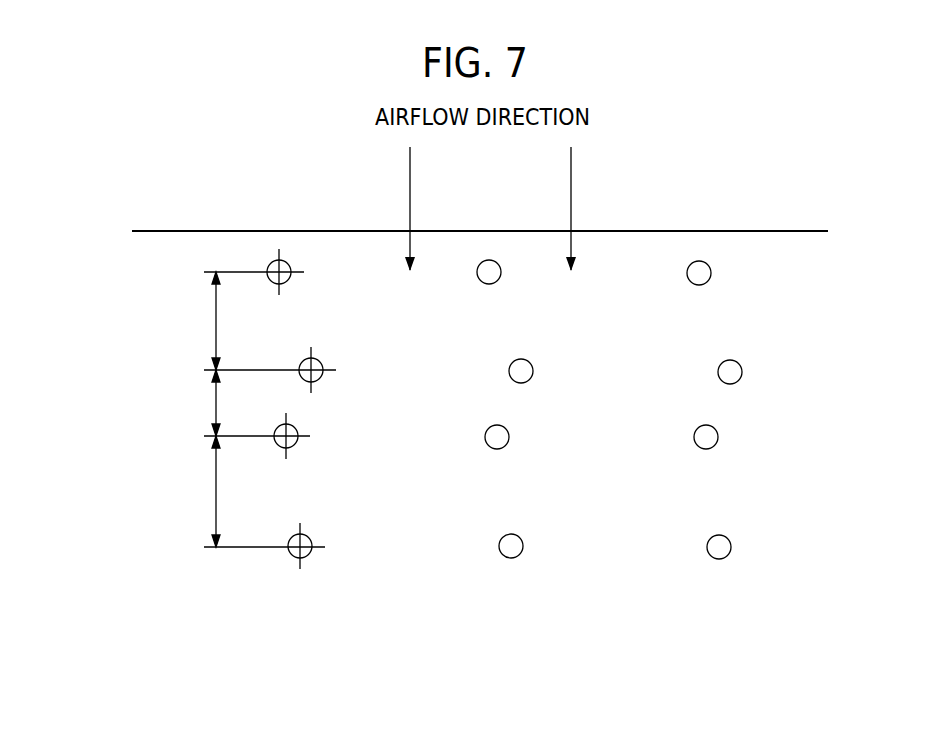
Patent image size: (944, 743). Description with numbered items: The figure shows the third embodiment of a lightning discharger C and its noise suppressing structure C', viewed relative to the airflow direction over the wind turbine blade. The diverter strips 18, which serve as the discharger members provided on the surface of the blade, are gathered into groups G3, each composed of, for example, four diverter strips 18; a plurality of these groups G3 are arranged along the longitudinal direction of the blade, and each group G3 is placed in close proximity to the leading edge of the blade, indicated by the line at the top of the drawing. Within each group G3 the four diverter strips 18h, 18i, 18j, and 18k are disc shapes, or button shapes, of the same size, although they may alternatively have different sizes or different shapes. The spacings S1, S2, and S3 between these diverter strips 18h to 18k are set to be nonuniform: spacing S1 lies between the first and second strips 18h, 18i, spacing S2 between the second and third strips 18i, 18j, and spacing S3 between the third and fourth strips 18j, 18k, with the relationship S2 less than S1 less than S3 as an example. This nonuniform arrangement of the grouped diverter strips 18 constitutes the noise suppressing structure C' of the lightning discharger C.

The diverter strips 18 is at (292, 258).
The diverter strip 18h is at (534, 251).
The diverter strip 18i is at (320, 378).
The diverter strip 18j is at (295, 444).
The diverter strip 18k is at (309, 554).
The group G3 is at (299, 608).
The spacing S1 is at (260, 321).
The spacing S2 is at (247, 403).
The spacing S3 is at (255, 491).
The lightning discharger C is at (205, 145).
The noise suppressing structure C' is at (107, 399).